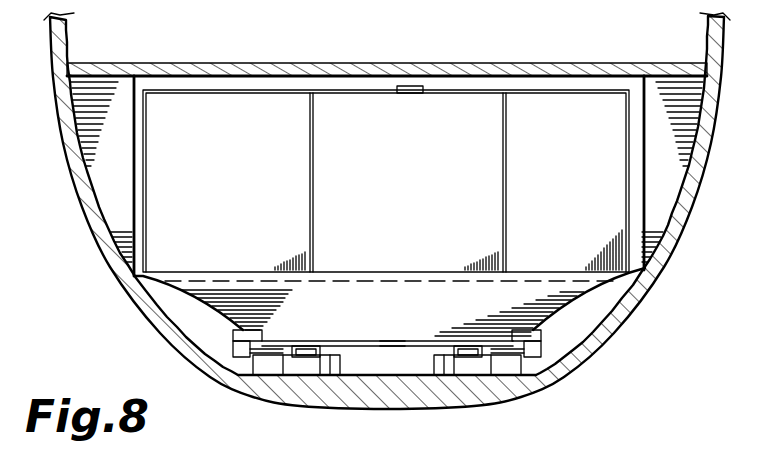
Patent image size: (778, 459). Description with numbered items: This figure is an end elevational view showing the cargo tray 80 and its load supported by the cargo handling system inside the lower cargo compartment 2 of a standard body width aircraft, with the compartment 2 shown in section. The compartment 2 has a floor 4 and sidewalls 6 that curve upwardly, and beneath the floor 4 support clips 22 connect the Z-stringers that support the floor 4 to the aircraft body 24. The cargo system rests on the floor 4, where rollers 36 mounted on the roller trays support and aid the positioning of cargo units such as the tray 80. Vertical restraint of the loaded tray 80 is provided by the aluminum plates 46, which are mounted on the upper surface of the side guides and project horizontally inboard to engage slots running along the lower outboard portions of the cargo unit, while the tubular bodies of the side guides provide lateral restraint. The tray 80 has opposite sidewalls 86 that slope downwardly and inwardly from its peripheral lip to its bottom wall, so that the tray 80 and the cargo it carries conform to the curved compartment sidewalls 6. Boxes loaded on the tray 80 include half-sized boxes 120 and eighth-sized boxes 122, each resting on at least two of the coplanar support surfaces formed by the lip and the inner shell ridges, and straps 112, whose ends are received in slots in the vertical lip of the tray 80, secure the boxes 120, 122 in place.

The lower cargo compartment 2 is at (637, 90).
The floor 4 is at (401, 345).
The sidewalls 6 is at (616, 330).
The support clips 22 is at (308, 347).
The aircraft body 24 is at (537, 378).
The rollers 36 is at (308, 366).
The aluminum plates 46 is at (233, 334).
The cargo tray 80 is at (604, 303).
The sidewalls of the tray 86 is at (190, 292).
The straps 112 is at (127, 237).
The half-sized boxes 120 is at (243, 158).
The eighth-sized boxes 122 is at (587, 158).